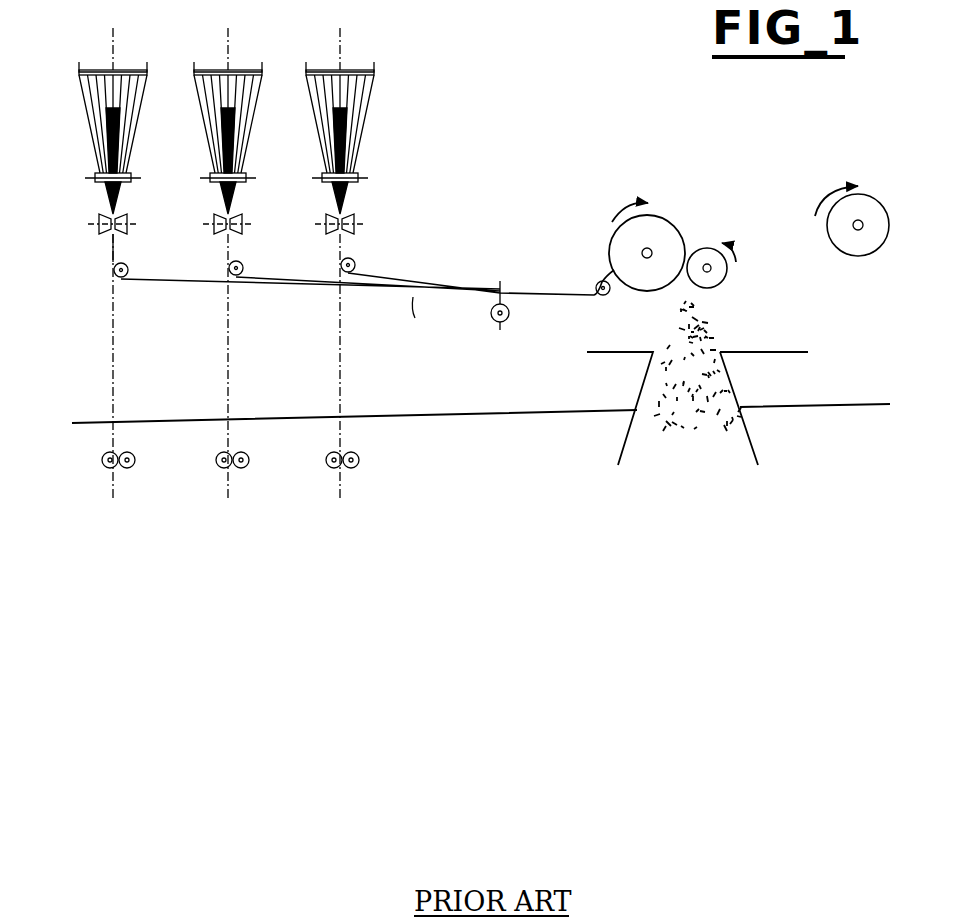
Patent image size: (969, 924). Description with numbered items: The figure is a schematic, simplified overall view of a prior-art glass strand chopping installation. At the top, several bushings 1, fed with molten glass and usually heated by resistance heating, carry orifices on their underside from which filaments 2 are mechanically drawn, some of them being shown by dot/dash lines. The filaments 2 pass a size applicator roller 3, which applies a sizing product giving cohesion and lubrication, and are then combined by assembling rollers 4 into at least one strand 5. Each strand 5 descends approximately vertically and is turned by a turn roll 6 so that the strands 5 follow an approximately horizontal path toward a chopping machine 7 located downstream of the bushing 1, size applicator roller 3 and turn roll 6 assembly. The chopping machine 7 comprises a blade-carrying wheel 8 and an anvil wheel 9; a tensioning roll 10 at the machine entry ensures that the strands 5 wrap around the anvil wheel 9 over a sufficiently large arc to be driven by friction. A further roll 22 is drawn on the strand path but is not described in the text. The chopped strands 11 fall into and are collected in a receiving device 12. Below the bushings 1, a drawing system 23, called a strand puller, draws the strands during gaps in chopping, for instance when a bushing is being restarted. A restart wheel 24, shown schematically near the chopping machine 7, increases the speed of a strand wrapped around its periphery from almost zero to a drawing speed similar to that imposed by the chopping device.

The bushing 1 is at (118, 70).
The filaments 2 is at (90, 124).
The size applicator roller 3 is at (93, 176).
The assembling rollers 4 is at (97, 219).
The strand 5 is at (114, 247).
The turn roll 6 is at (130, 271).
The chopping machine 7 is at (690, 201).
The blade-carrying wheel 8 is at (717, 262).
The anvil wheel 9 is at (644, 234).
The tensioning roll 10 is at (592, 272).
The chopped strands 11 is at (728, 327).
The receiving device 12 is at (744, 385).
The tension roller 22 is at (491, 324).
The drawing system 23 is at (140, 464).
The restart wheel 24 is at (869, 200).